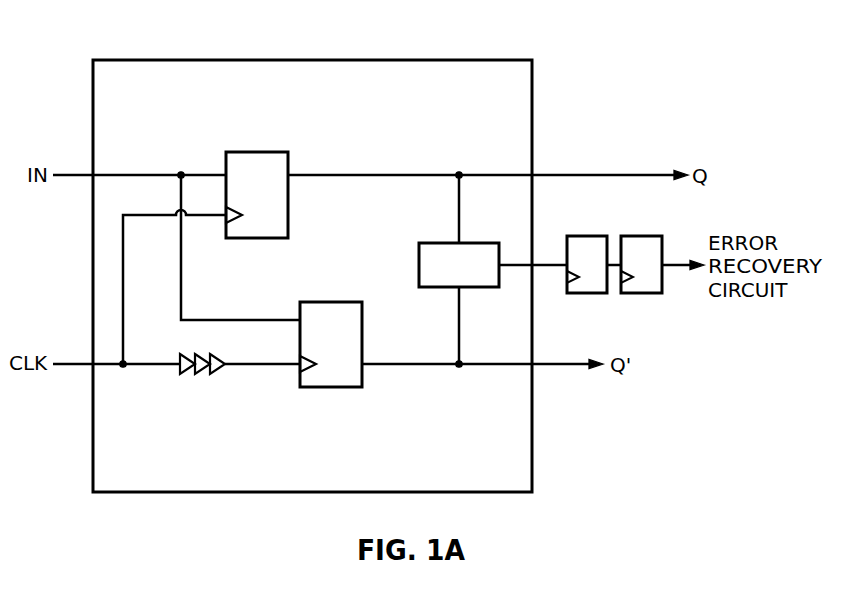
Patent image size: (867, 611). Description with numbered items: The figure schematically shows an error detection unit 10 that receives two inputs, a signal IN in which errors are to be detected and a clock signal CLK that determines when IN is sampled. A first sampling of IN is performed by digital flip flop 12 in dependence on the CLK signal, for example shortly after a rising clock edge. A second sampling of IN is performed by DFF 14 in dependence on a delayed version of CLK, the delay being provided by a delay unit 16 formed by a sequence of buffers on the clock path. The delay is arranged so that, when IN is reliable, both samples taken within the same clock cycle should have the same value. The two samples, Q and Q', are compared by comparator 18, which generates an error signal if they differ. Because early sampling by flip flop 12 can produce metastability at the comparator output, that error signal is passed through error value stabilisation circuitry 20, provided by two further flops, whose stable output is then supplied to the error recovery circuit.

The error detection unit 10 is at (170, 60).
The digital flip flop 12 is at (258, 152).
The DFF 14 is at (334, 302).
The delay unit 16 is at (225, 388).
The comparator 18 is at (442, 243).
The error value stabilisation circuitry 20 is at (662, 303).